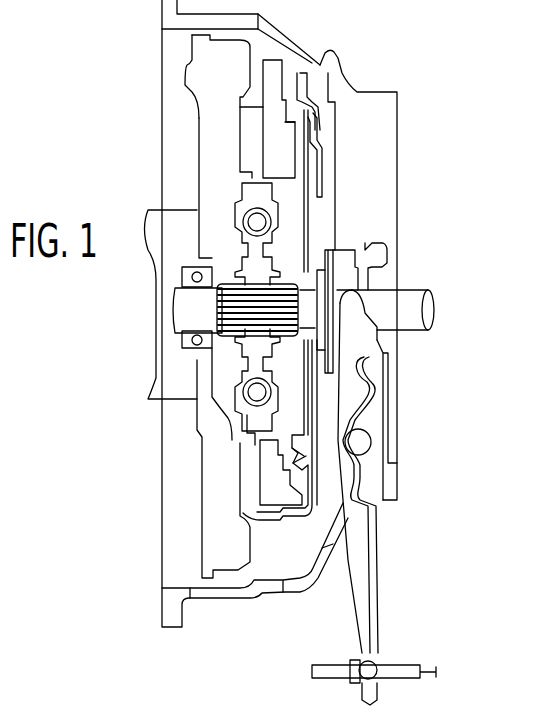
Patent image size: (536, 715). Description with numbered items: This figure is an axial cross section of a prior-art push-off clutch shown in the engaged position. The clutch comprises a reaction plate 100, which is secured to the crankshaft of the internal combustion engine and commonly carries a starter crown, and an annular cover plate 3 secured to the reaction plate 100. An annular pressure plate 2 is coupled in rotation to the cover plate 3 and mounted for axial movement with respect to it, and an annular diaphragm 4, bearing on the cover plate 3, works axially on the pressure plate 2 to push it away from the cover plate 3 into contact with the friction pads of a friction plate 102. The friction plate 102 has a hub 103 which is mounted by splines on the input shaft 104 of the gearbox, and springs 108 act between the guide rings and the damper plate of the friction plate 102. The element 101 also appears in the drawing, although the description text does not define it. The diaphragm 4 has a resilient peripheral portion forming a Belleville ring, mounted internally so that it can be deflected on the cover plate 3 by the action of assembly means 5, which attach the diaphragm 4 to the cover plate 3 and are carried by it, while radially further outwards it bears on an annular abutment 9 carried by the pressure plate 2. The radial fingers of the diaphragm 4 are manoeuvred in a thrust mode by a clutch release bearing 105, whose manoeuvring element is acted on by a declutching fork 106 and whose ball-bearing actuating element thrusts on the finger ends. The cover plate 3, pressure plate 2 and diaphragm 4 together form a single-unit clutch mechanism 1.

The clutch mechanism 1 is at (336, 76).
The pressure plate 2 is at (252, 113).
The cover plate 3 is at (331, 128).
The diaphragm 4 is at (312, 217).
The assembly means 5 is at (323, 430).
The annular abutment 9 is at (319, 91).
The reaction plate 100 is at (203, 505).
The bearing retainer 101 is at (163, 221).
The friction plate 102 is at (233, 206).
The hub 103 is at (240, 337).
The input shaft 104 is at (403, 303).
The clutch release bearing 105 is at (370, 249).
The declutching fork 106 is at (387, 613).
The springs 108 is at (247, 392).